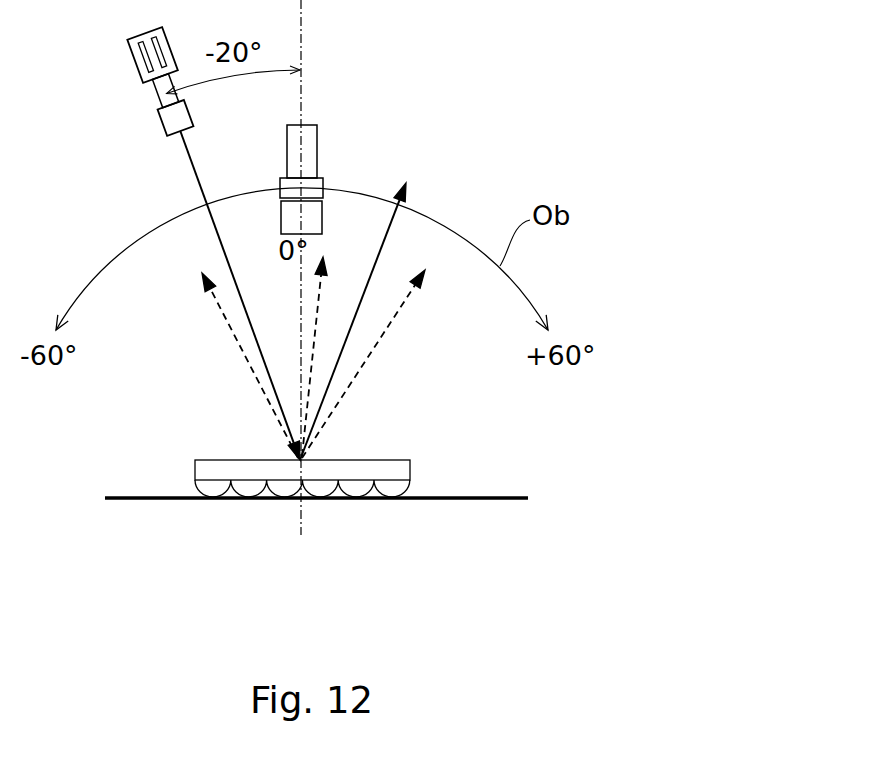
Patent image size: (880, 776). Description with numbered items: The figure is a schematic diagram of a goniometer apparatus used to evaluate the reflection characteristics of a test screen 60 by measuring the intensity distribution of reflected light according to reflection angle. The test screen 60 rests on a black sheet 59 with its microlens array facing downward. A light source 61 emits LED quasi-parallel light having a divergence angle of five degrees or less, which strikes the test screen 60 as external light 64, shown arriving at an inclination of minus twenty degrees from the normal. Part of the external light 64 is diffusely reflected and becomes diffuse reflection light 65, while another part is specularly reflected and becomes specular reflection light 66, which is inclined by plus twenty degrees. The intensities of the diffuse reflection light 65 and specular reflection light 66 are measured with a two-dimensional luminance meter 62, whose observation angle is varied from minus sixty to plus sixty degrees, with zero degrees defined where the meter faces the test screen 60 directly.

The black sheet 59 is at (498, 495).
The test screen 60 is at (393, 460).
The light source 61 is at (130, 62).
The 2-D luminance meter 62 is at (317, 153).
The external light 64 is at (196, 178).
The diffuse reflection light 65 is at (245, 369).
The specular reflection light 66 is at (386, 247).